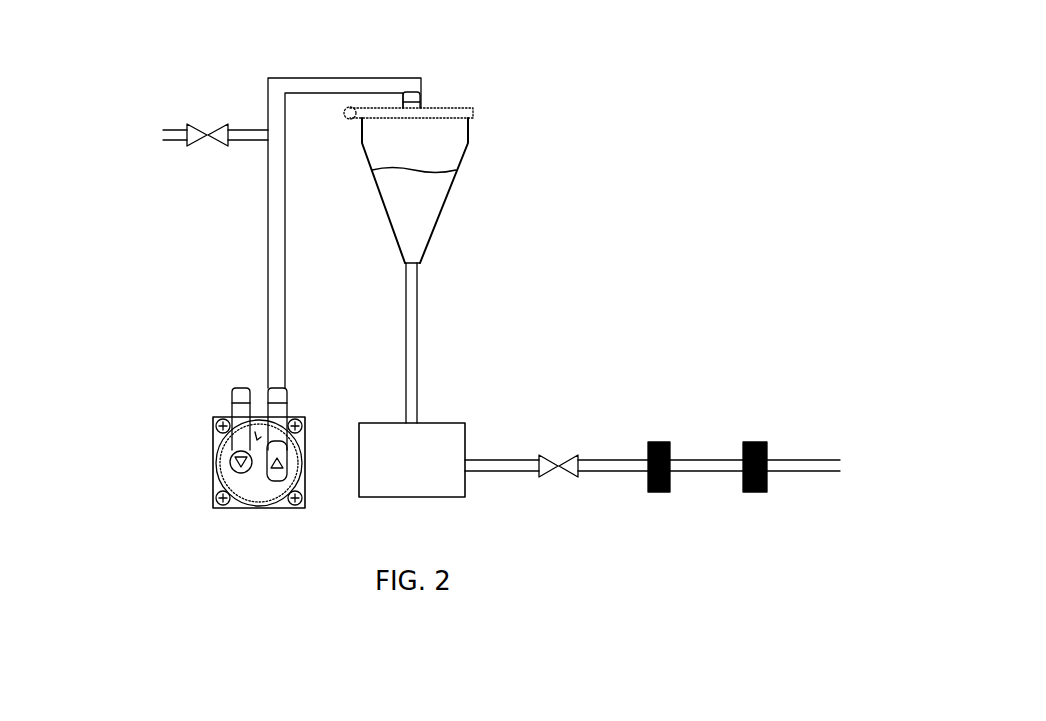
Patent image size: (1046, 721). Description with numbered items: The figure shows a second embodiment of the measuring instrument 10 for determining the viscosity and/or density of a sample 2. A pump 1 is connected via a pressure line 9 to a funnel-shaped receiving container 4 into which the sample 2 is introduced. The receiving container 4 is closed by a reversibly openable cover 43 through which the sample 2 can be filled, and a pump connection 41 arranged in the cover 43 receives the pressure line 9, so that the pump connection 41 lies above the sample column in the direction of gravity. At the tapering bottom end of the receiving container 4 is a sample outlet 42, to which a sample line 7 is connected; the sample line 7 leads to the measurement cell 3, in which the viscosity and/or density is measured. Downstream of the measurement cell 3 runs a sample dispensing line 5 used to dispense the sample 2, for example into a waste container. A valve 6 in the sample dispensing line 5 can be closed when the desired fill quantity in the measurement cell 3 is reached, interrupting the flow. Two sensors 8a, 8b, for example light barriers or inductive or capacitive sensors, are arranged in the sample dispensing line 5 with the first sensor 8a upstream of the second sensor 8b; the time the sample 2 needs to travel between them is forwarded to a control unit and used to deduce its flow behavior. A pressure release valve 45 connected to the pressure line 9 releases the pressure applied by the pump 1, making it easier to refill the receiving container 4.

The pump 1 is at (237, 438).
The sample 2 is at (413, 215).
The measurement cell 3 is at (426, 469).
The receiving container 4 is at (450, 185).
The sample dispensing line 5 is at (512, 469).
The valve 6 is at (557, 462).
The sample line 7 is at (413, 355).
The first sensor 8a is at (658, 442).
The second sensor 8b is at (767, 442).
The pressure line 9 is at (330, 82).
The measuring instrument 10 is at (533, 377).
The pump connection 41 is at (412, 98).
The sample outlet 42 is at (415, 268).
The cover 43 is at (472, 112).
The pressure release valve 45 is at (203, 127).